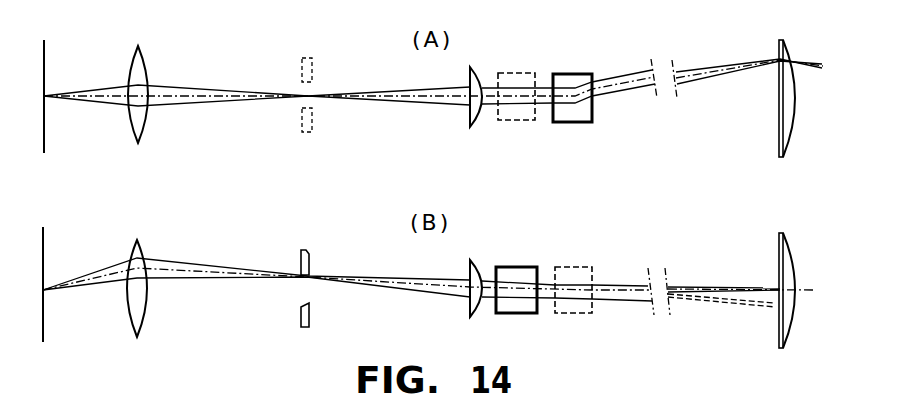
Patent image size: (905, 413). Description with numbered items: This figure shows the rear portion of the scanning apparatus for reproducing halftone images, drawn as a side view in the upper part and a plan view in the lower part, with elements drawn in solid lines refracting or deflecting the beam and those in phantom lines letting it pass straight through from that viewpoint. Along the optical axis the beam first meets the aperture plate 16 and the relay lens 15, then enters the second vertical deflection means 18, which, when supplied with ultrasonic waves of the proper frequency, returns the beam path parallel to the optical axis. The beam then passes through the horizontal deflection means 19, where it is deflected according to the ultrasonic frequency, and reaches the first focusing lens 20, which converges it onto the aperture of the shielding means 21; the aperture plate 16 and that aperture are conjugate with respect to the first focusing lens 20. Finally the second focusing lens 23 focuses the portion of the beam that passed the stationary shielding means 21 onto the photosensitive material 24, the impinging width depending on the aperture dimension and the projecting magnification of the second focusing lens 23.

The relay lens 15 is at (791, 42).
The aperture plate 16 is at (779, 44).
The second vertical deflection means 18 is at (566, 74).
The horizontal deflection means 19 is at (517, 73).
The first focusing lens 20 is at (472, 67).
The shielding means 21 is at (309, 60).
The second focusing lens 23 is at (144, 53).
The photosensitive material 24 is at (45, 51).